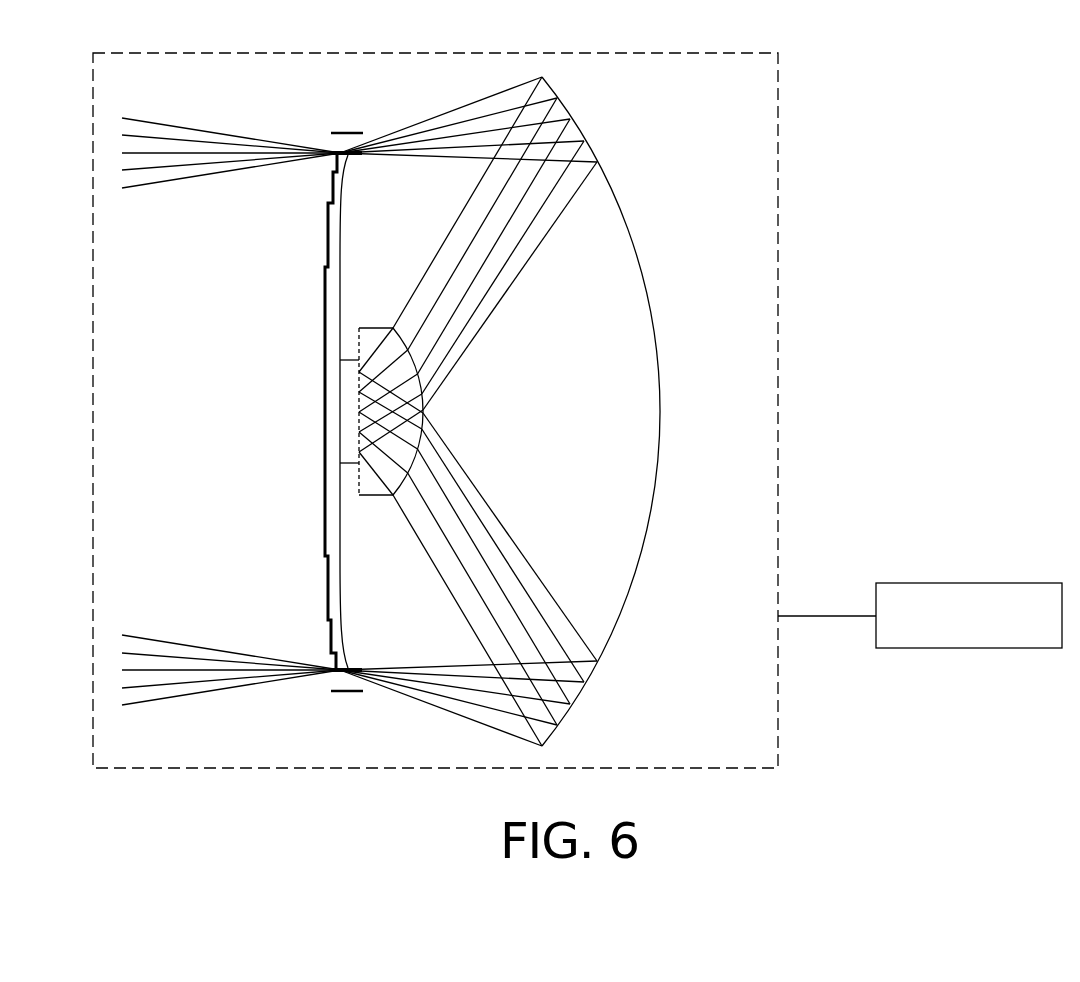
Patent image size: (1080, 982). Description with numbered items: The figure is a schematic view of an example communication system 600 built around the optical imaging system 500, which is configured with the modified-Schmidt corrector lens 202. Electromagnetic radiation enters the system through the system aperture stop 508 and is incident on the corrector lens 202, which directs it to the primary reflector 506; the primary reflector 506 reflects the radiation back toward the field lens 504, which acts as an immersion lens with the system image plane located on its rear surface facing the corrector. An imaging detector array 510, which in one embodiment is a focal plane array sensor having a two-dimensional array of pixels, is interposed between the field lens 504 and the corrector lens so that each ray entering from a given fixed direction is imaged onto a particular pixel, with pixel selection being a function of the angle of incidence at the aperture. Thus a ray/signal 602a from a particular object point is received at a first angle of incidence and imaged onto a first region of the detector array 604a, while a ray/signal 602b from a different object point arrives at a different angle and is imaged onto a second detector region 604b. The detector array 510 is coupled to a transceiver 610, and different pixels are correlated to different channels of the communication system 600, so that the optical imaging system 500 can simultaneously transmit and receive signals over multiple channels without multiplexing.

The communication system 600 is at (849, 90).
The optical imaging system 500 is at (778, 342).
The transceiver 610 is at (945, 583).
The modified-Schmidt corrector lens 202 is at (323, 492).
The primary reflector 506 is at (643, 273).
The system aperture stop 508 is at (343, 130).
The field lens 504 is at (370, 328).
The imaging detector array 510 is at (340, 368).
The first region of the detector array 604a is at (333, 438).
The second detector region 604b is at (332, 387).
The ray/signal 602a is at (180, 127).
The ray/signal 602b is at (180, 180).